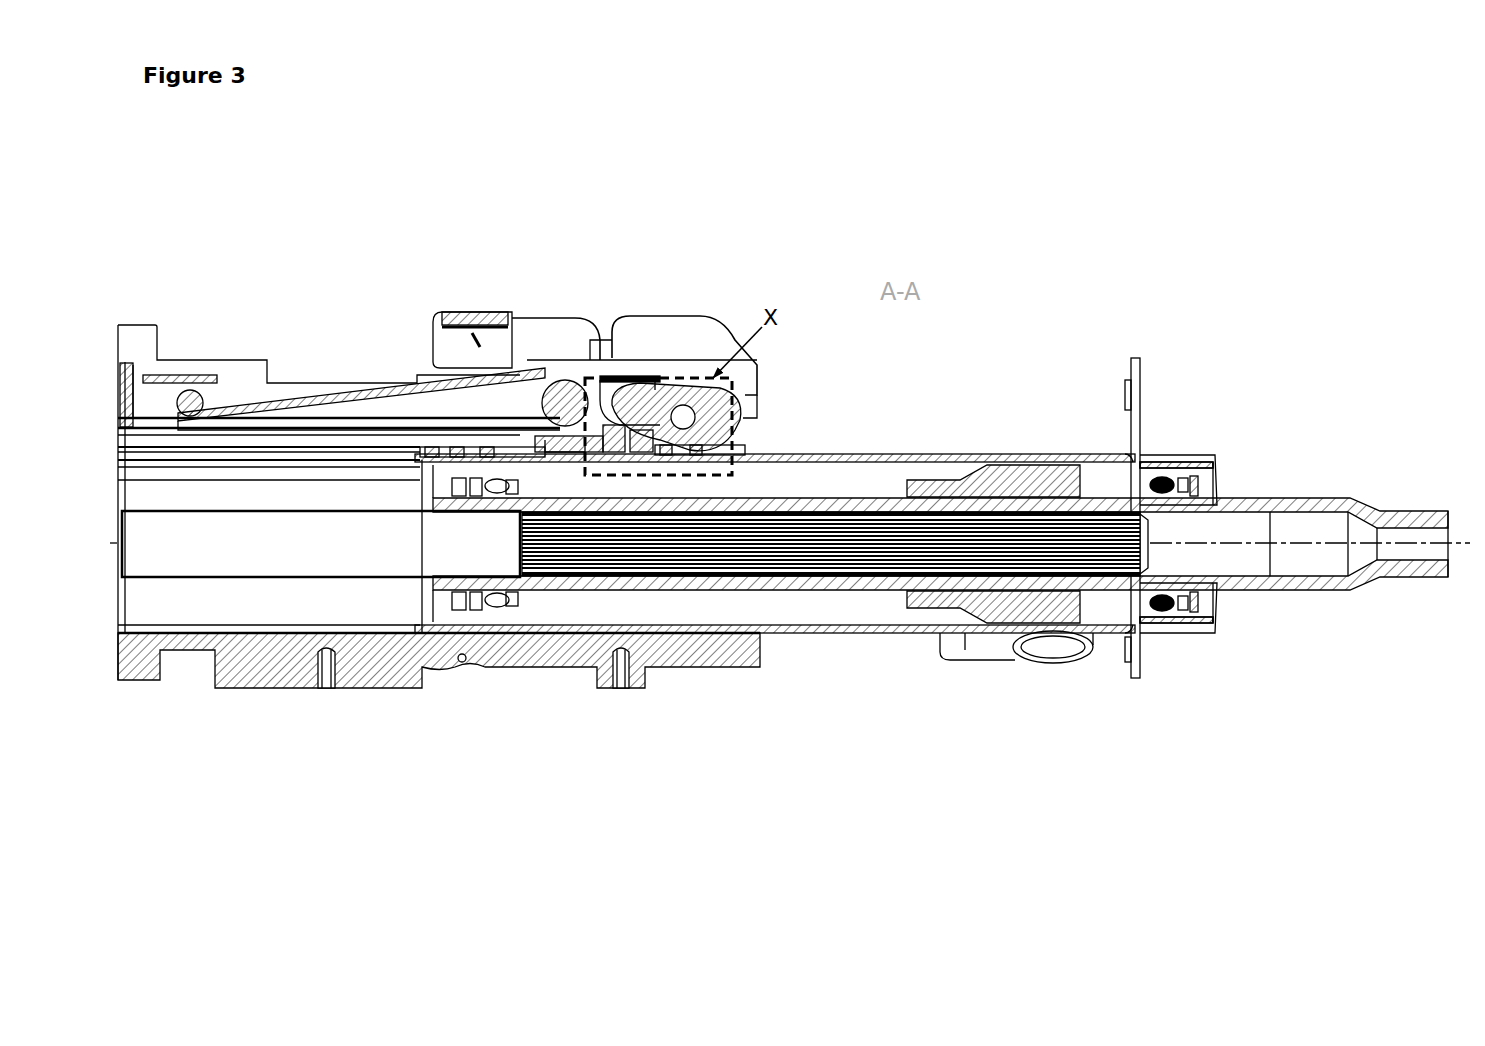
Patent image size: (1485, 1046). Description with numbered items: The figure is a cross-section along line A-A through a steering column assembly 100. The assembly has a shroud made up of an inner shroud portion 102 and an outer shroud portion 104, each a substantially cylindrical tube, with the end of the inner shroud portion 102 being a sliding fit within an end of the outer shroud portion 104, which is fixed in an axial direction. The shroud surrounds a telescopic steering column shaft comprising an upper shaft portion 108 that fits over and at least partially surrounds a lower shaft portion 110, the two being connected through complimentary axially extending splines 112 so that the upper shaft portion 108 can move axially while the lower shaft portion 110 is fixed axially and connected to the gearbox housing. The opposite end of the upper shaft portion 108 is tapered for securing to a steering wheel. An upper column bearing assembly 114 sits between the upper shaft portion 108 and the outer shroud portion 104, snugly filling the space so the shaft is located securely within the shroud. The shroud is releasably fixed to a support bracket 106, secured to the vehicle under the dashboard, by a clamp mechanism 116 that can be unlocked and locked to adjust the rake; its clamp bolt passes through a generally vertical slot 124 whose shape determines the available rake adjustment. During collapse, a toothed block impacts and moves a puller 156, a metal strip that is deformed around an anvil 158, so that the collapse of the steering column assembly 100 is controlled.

The steering column assembly 100 is at (1085, 220).
The inner shroud portion 102 is at (1085, 450).
The outer shroud portion 104 is at (358, 690).
The support bracket 106 is at (450, 302).
The upper shaft portion 108 is at (1280, 497).
The lower shaft portion 110 is at (263, 578).
The splines 112 is at (535, 572).
The upper column bearing assembly 114 is at (445, 600).
The clamp mechanism 116 is at (657, 377).
The vertical slot 124 is at (677, 353).
The puller 156 is at (568, 448).
The anvil 158 is at (550, 400).